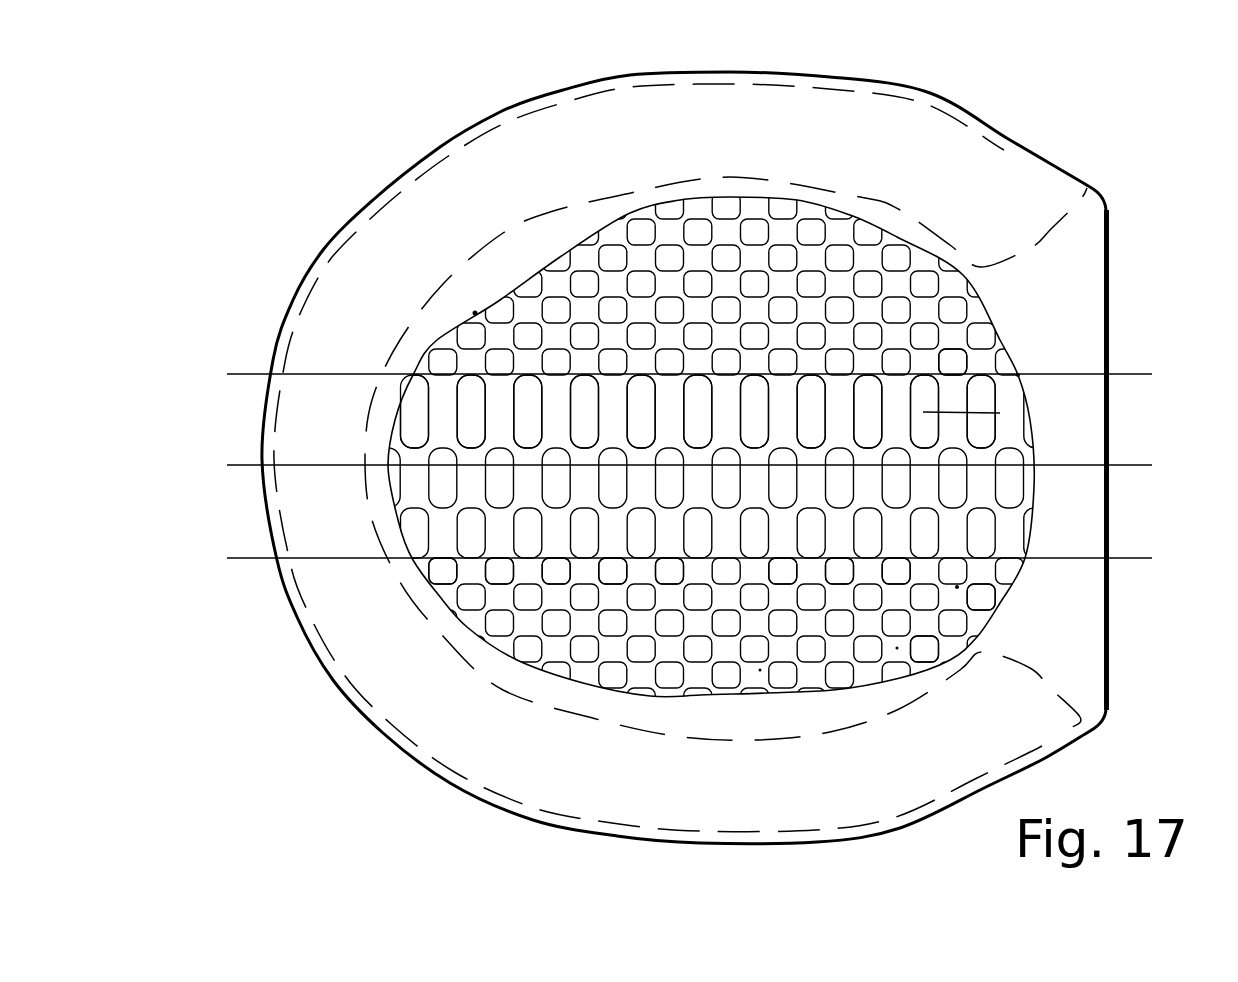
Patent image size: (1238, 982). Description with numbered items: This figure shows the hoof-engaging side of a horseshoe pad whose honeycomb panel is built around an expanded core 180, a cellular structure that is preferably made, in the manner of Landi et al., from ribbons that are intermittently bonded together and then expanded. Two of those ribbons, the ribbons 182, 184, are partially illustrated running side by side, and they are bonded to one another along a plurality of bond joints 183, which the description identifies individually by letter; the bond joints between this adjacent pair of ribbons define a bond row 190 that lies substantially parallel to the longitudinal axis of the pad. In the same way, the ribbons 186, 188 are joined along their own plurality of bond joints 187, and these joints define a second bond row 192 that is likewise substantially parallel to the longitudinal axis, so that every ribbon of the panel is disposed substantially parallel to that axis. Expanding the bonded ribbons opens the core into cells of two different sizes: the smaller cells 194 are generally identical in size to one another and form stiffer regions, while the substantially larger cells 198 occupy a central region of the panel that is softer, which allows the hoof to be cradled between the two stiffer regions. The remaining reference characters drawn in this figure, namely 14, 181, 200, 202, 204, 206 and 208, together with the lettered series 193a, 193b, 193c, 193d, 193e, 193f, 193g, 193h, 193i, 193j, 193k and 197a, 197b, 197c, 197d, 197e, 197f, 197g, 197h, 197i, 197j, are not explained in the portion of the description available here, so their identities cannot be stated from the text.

The pad 14 is at (985, 110).
The expanded core 180 is at (1113, 198).
The curved edge portion 181 is at (260, 487).
The ribbon 182 is at (1108, 437).
The bond joints 183 is at (243, 465).
The ribbon 184 is at (548, 134).
The ribbon 186 is at (450, 633).
The bond joints 187 is at (823, 205).
The ribbon 188 is at (475, 313).
The bond row 190 is at (900, 655).
The bond row 192 is at (960, 378).
The warp strand 193a is at (427, 375).
The warp strand 193b is at (470, 375).
The warp strand 193c is at (527, 375).
The warp strand 193d is at (583, 375).
The warp strand 193e is at (640, 375).
The warp strand 193f is at (697, 375).
The warp strand 193g is at (753, 375).
The warp strand 193h is at (810, 375).
The warp strand 193i is at (867, 375).
The warp strand 193j is at (923, 375).
The warp strand 193k is at (980, 378).
The cells 194 is at (1018, 375).
The weft strand 197a is at (441, 558).
The weft strand 197b is at (498, 545).
The weft strand 197c is at (527, 558).
The weft strand 197d is at (583, 558).
The weft strand 197e is at (640, 558).
The weft strand 197f is at (753, 558).
The weft strand 197g is at (810, 584).
The weft strand 197h is at (867, 584).
The weft strand 197i is at (900, 650).
The weft strand 197j is at (985, 630).
The cells 198 is at (957, 587).
The upper line 200 is at (240, 374).
The lower line 202 is at (248, 560).
The filament 204 is at (760, 670).
The mesh 206 is at (637, 245).
The filament 208 is at (1000, 413).